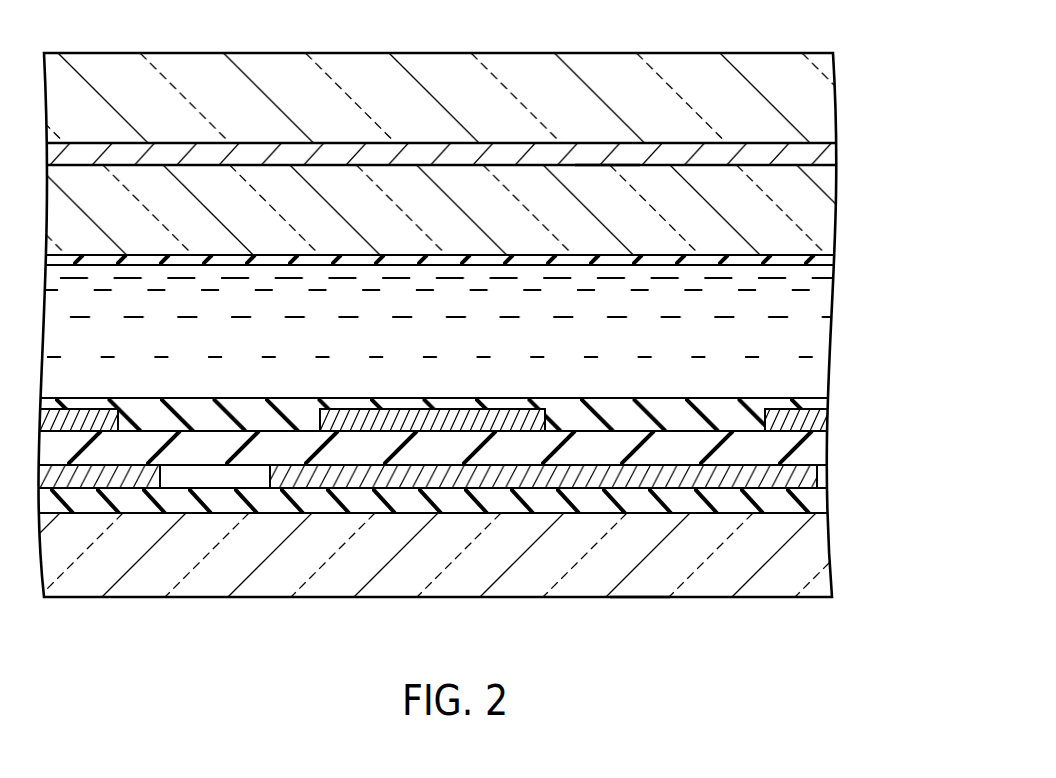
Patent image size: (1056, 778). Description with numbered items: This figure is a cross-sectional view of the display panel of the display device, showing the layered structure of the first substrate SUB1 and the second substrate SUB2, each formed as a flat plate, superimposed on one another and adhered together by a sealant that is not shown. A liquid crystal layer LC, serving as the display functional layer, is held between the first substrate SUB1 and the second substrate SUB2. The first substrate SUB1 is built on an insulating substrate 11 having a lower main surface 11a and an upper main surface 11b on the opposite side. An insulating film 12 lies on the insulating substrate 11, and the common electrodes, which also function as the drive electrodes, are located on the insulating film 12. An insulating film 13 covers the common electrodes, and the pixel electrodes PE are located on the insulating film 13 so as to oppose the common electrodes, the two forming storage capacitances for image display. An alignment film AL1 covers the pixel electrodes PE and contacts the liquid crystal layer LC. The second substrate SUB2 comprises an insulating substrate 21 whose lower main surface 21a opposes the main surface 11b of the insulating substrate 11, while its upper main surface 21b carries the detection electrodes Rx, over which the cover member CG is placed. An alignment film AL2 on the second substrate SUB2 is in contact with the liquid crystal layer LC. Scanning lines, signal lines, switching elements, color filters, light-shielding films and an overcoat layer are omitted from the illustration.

The cover member CG is at (822, 94).
The detection electrodes Rx is at (823, 155).
The insulating substrate 21 is at (823, 208).
The alignment film AL2 is at (815, 258).
The liquid crystal layer LC is at (815, 323).
The alignment film AL1 is at (823, 402).
The pixel electrodes PE is at (813, 418).
The insulating film 13 is at (815, 446).
The insulating film 12 is at (813, 502).
The insulating substrate 11 is at (815, 545).
The main surface 21a is at (677, 236).
The main surface 21b is at (594, 181).
The main surface 11a is at (639, 581).
The main surface 11b is at (705, 533).
The first substrate SUB1 is at (525, 513).
The second substrate SUB2 is at (525, 140).